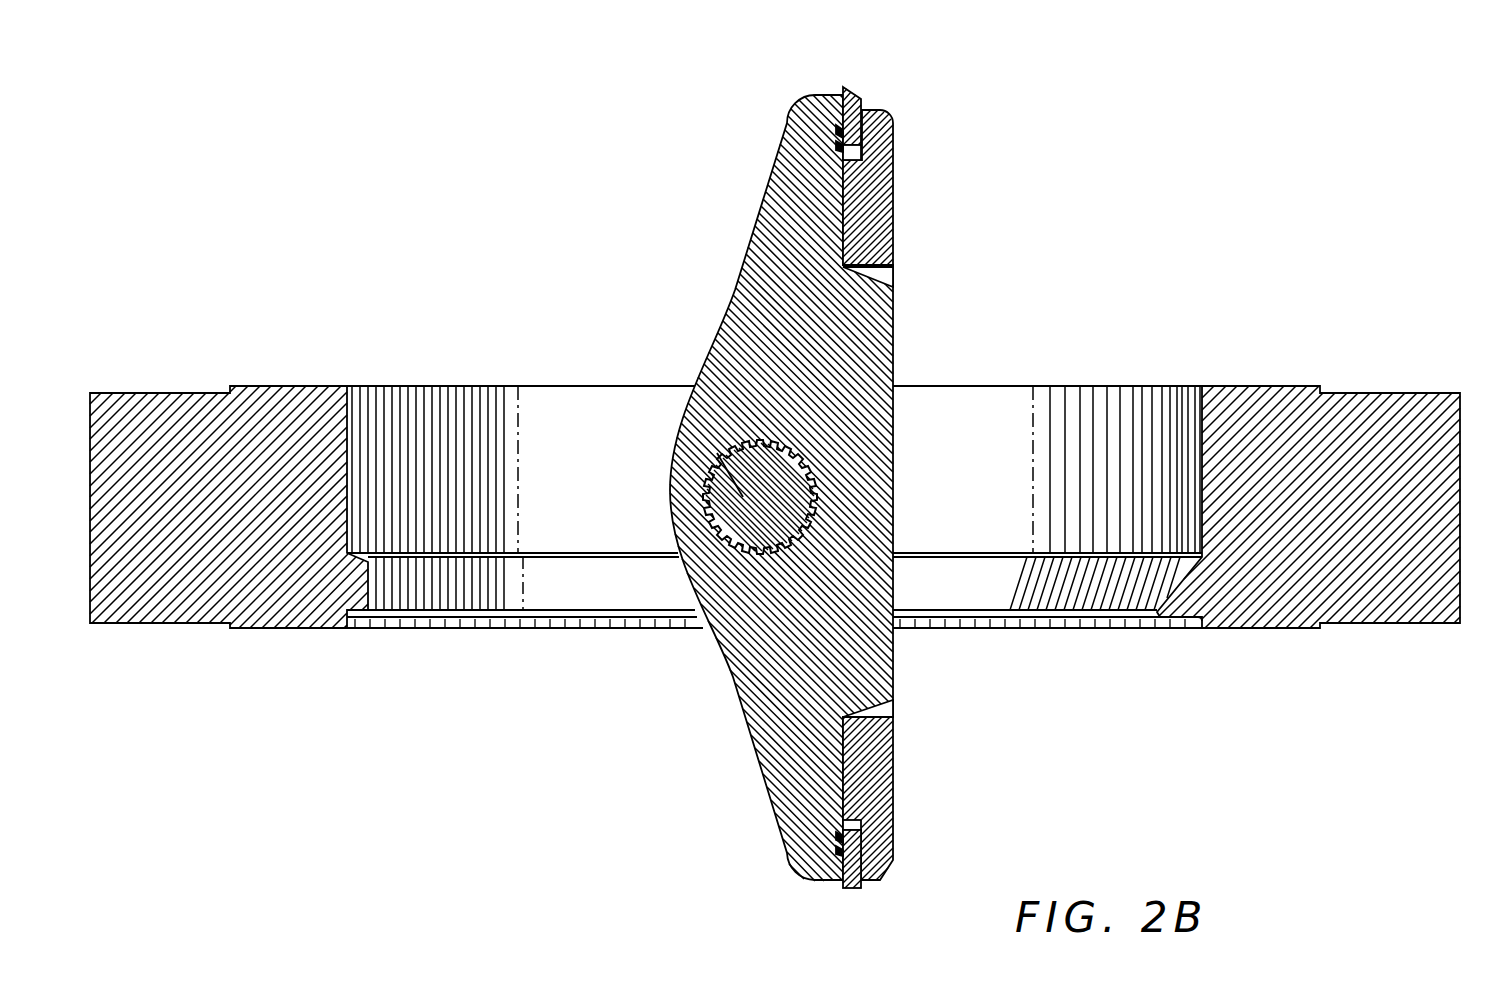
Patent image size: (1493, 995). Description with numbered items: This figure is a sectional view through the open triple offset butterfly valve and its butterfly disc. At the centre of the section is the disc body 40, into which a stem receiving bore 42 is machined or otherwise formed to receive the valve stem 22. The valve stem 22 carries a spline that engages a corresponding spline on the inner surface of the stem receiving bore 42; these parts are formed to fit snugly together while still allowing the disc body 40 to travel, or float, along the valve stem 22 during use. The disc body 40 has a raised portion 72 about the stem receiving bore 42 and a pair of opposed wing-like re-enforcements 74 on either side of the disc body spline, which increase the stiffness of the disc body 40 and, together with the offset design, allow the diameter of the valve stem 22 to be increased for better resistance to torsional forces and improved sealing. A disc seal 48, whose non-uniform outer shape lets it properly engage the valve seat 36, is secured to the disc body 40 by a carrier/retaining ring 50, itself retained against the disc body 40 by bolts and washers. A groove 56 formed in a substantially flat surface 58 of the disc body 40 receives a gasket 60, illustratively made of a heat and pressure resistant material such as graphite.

The valve stem 22 is at (687, 437).
The valve seat 36 is at (447, 585).
The disc body 40 is at (733, 677).
The stem receiving bore 42 is at (800, 455).
The disc seal 48 is at (853, 92).
The carrier/retaining ring 50 is at (880, 758).
The groove 56 is at (840, 840).
The substantially flat surface 58 is at (845, 225).
The gasket 60 is at (837, 137).
The raised portion 72 is at (687, 503).
The wing-like re-enforcements 74 is at (777, 303).